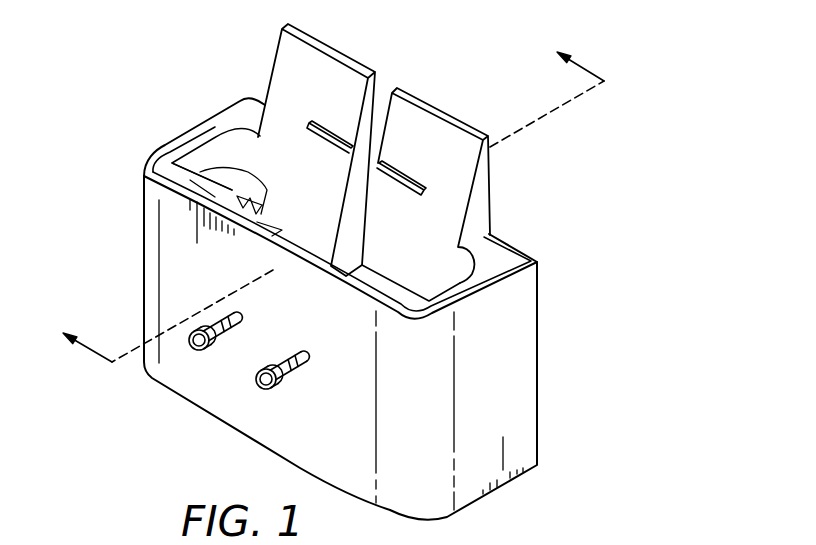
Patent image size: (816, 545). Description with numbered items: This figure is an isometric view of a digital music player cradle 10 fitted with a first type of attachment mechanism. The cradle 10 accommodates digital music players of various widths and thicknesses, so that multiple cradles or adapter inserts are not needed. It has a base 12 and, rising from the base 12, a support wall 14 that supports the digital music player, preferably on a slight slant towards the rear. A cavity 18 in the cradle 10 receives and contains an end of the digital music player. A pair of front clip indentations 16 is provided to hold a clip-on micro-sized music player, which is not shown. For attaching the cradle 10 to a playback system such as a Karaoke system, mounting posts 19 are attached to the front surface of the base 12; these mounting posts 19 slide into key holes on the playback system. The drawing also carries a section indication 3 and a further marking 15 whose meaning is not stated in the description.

The container assembly 10 is at (628, 305).
The body 12 is at (325, 433).
The plate 14 is at (305, 28).
The opening 15 is at (406, 256).
The rib 16 is at (327, 143).
The recess 18 is at (236, 152).
The screw 19 is at (193, 350).
The section line 3- 3 is at (324, 199).